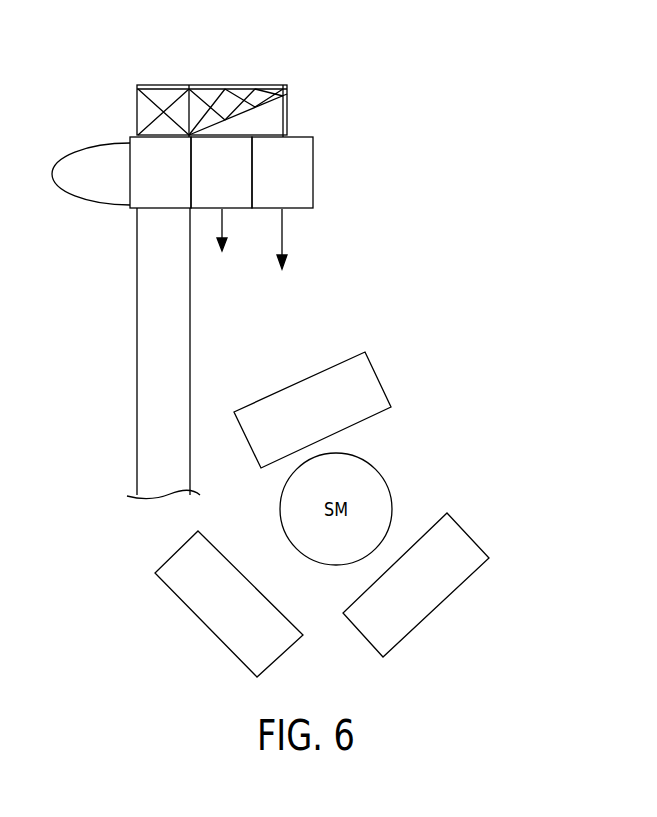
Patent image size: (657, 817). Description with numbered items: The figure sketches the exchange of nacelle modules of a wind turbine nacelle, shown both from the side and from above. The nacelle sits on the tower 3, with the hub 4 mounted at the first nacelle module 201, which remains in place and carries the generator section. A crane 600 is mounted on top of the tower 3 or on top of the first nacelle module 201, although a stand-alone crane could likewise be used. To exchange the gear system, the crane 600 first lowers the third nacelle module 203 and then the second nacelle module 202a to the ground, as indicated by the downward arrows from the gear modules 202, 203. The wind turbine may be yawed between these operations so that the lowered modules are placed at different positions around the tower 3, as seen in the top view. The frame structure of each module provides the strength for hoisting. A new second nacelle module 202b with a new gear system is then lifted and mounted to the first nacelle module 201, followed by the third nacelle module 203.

The crane 600 is at (137, 88).
The second nacelle module 202 is at (230, 147).
The third nacelle module 203 is at (298, 145).
The hub 4 is at (68, 163).
The first nacelle module 201 is at (143, 201).
The tower 3 is at (150, 282).
The new second nacelle module 202b is at (359, 370).
The second nacelle module 202a is at (460, 577).